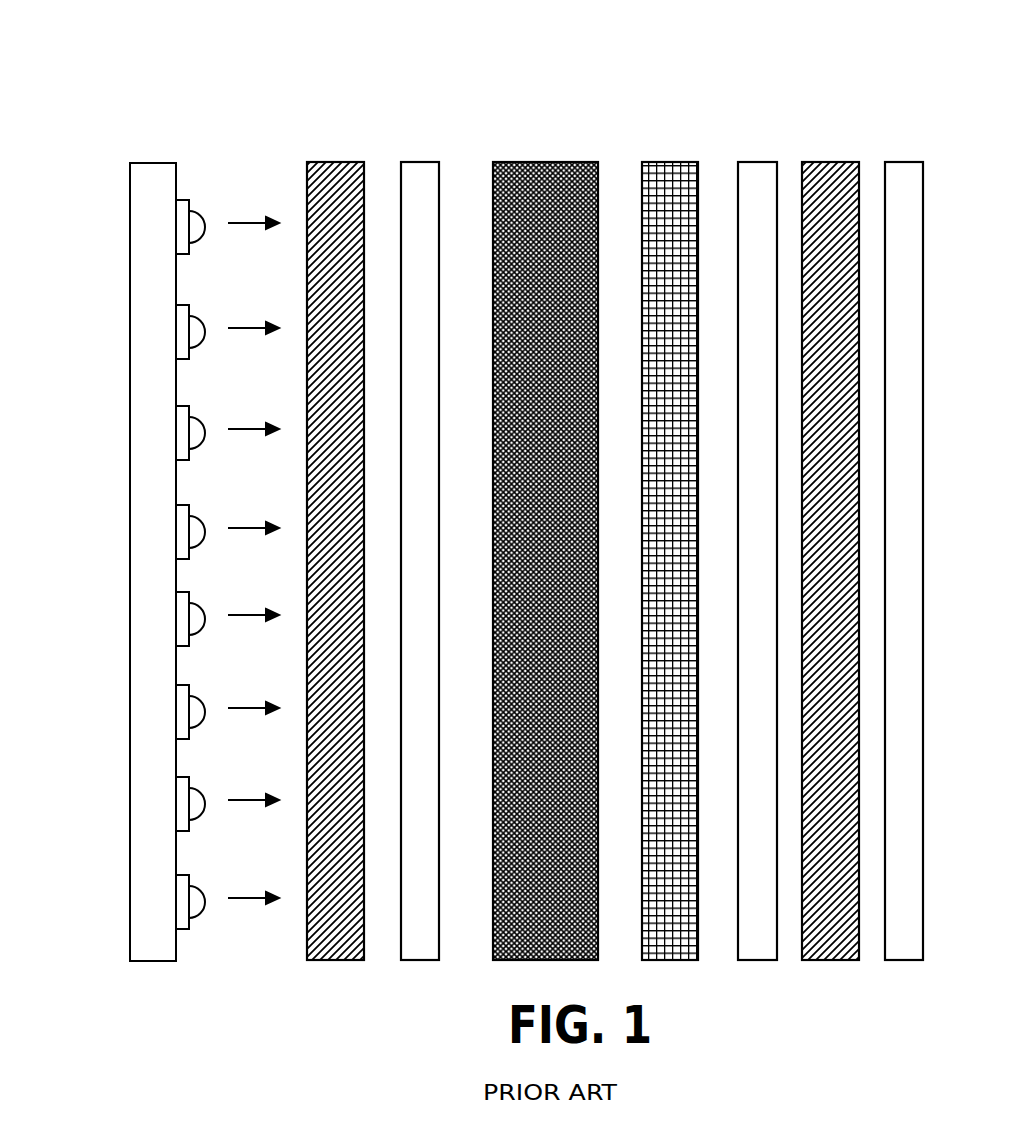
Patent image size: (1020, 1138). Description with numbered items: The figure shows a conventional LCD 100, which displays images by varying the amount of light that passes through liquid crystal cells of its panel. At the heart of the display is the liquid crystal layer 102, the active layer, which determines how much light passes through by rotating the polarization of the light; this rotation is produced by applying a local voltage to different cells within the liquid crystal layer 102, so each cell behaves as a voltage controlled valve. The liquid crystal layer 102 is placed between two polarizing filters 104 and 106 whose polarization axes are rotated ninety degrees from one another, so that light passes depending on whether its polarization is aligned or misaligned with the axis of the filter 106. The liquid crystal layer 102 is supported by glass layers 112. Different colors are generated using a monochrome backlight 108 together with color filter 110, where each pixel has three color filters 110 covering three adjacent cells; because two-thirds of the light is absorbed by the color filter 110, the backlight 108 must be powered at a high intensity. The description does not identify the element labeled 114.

The LCD 100 is at (508, 31).
The liquid crystal layer 102 is at (527, 158).
The polarizing filter 104 is at (340, 158).
The polarizing filter 106 is at (835, 158).
The backlight 108 is at (117, 167).
The color filter 110 is at (675, 158).
The glass layers 112 is at (428, 158).
The liquid crystal panel 114 is at (912, 158).